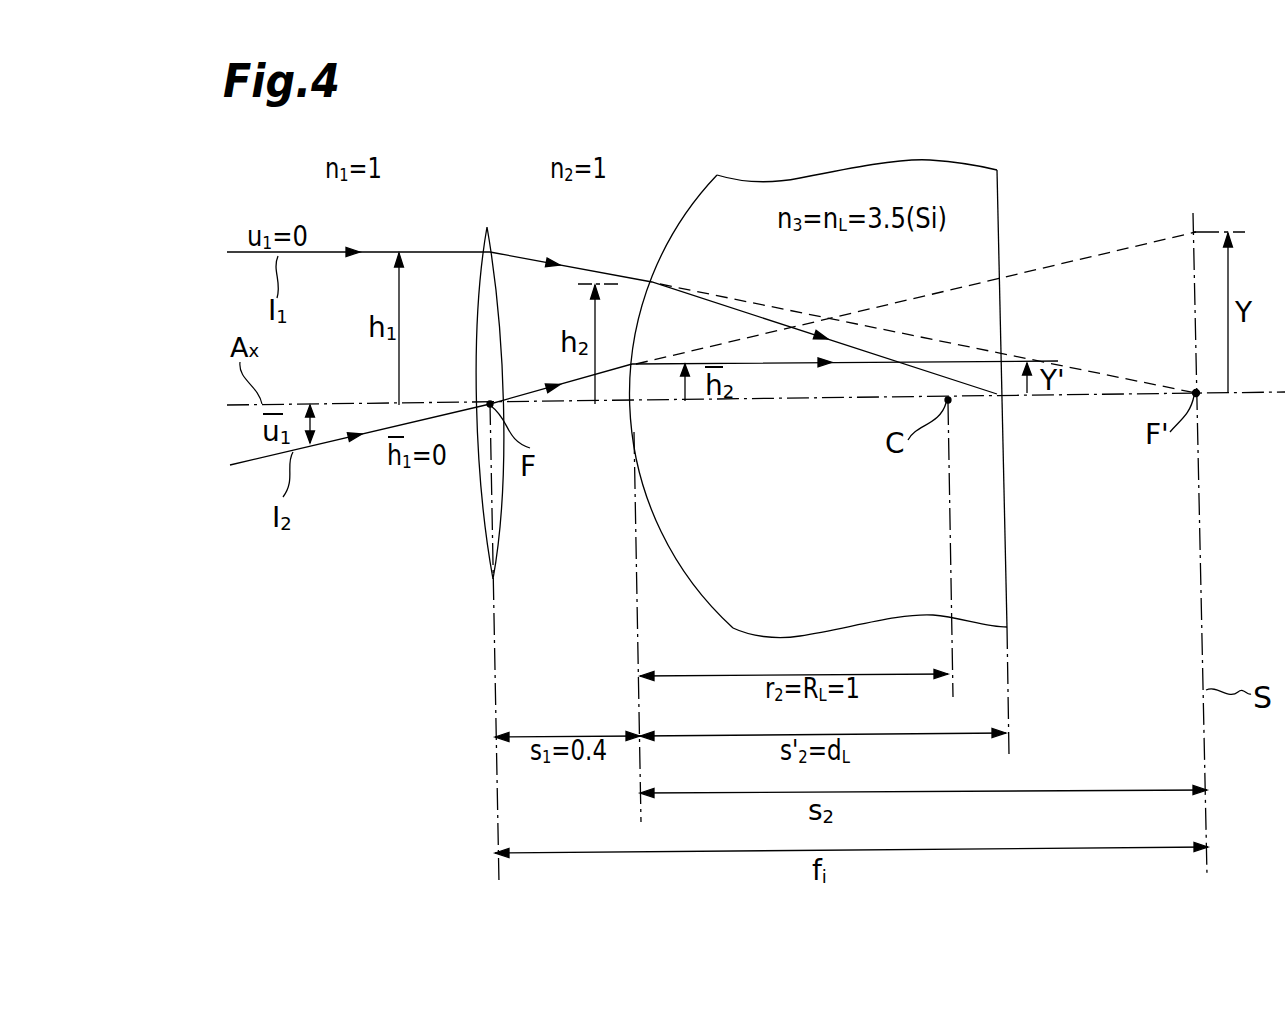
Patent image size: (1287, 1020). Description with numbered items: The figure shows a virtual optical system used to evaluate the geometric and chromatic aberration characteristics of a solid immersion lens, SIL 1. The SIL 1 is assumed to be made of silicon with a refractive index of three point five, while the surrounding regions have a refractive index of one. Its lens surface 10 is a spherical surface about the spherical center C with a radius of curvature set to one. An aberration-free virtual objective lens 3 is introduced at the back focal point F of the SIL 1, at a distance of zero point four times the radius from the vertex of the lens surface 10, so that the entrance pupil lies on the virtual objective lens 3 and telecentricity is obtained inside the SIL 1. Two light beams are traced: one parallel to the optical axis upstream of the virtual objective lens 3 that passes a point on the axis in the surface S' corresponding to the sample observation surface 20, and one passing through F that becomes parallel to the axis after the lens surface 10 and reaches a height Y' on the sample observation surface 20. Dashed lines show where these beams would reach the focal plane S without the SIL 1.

The solid immersion lens (SIL) 1 is at (856, 434).
The virtual objective lens 3 is at (488, 226).
The lens surface 10 is at (662, 545).
The sample observation surface 20 is at (1008, 690).